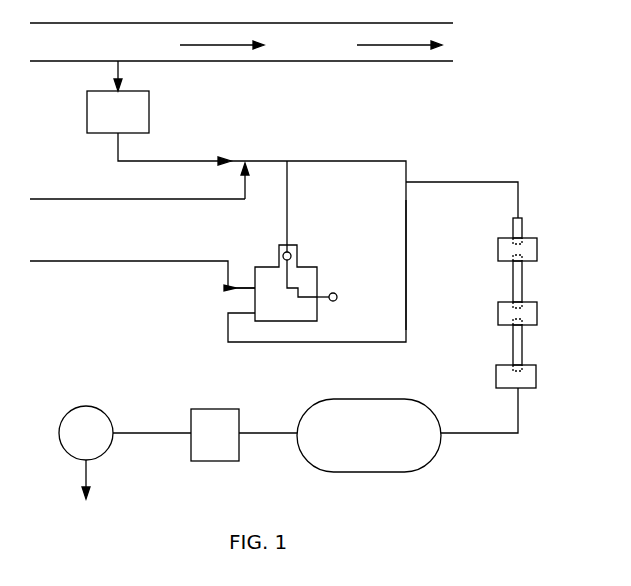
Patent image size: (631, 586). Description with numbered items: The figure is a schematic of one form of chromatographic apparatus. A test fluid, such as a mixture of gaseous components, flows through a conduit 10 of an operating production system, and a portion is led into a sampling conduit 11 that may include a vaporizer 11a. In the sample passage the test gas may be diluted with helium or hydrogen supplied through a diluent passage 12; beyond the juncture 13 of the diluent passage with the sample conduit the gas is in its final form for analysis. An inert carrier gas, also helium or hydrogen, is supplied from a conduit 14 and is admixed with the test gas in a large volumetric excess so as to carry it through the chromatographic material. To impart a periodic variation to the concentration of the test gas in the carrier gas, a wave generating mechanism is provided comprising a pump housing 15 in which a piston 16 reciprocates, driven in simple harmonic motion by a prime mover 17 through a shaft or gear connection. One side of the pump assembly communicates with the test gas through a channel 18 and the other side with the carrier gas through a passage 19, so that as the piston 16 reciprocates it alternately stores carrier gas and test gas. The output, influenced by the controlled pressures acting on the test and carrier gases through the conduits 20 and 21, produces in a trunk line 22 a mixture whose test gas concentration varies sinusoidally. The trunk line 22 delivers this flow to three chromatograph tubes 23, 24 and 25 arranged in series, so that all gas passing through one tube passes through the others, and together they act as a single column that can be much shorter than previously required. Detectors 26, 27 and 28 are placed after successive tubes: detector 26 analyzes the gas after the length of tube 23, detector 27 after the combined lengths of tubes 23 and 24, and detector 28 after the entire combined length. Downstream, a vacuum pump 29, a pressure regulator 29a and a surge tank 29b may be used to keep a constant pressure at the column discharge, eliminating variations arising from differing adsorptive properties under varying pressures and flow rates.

The conduit 10 is at (78, 62).
The sampling conduit 11 is at (120, 72).
The vaporizer 11a is at (149, 108).
The diluent passage 12 is at (75, 199).
The juncture 13 is at (238, 160).
The conduit 14 is at (77, 261).
The pump housing 15 is at (298, 257).
The piston 16 is at (283, 253).
The prime mover 17 is at (337, 300).
The channel 18 is at (288, 215).
The passage 19 is at (233, 289).
The conduit 20 is at (323, 161).
The conduit 21 is at (406, 272).
The trunk line 22 is at (437, 182).
The chromatograph tube 23 is at (522, 225).
The chromatograph tube 24 is at (522, 282).
The chromatograph tube 25 is at (522, 346).
The detector 26 is at (537, 248).
The detector 27 is at (537, 312).
The detector 28 is at (536, 375).
The vacuum pump 29 is at (84, 405).
The pressure regulator 29a is at (202, 409).
The surge tank 29b is at (330, 399).